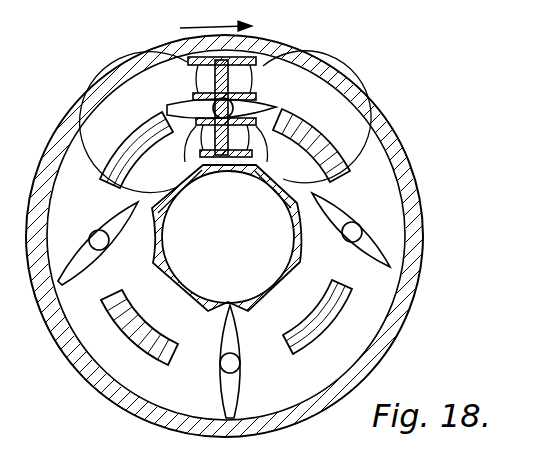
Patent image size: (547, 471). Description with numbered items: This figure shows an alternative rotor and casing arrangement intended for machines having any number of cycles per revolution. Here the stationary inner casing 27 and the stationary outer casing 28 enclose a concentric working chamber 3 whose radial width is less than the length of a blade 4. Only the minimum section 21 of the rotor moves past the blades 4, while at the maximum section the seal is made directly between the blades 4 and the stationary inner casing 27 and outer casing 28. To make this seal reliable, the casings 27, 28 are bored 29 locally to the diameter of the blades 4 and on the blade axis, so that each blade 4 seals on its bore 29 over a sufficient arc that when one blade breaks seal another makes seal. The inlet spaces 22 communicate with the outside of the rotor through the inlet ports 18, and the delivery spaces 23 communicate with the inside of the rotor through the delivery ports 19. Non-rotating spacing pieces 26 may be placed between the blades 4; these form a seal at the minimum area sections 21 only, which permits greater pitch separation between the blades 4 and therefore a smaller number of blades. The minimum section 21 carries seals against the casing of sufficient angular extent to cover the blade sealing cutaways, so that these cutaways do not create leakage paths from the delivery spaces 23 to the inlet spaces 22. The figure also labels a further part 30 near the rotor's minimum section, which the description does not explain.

The working chamber 3 is at (155, 388).
The blade 4 is at (274, 106).
The inlet port 18 is at (138, 113).
The delivery port 19 is at (290, 170).
The minimum section 21 is at (266, 62).
The inlet space 22 is at (86, 221).
The delivery space 23 is at (383, 204).
The non-rotating spacing piece 26 is at (306, 130).
The stationary inner casing 27 is at (288, 208).
The stationary outer casing 28 is at (355, 102).
The bore 29 is at (237, 418).
The piston stem 30 is at (196, 63).